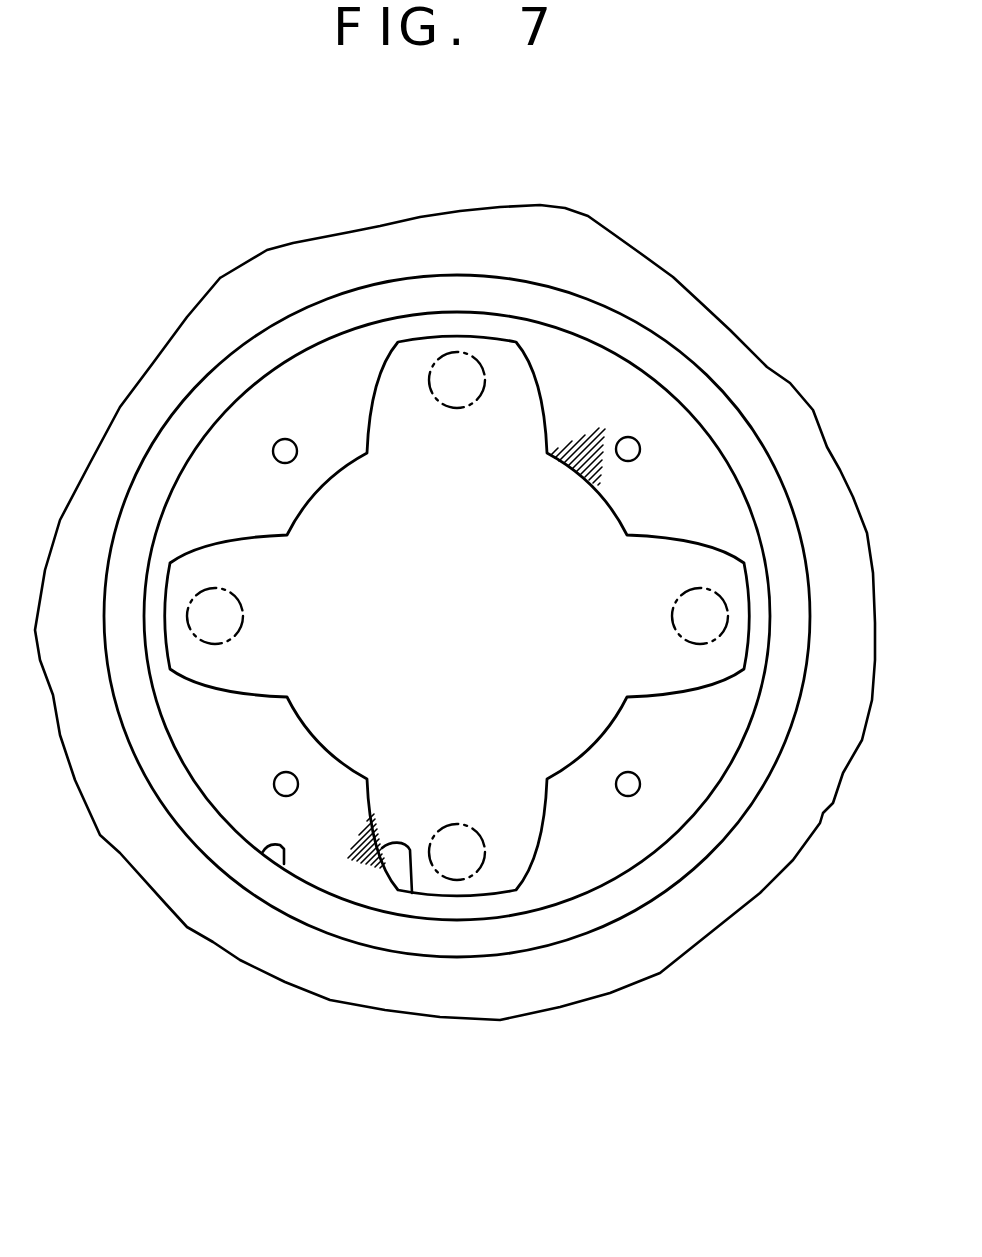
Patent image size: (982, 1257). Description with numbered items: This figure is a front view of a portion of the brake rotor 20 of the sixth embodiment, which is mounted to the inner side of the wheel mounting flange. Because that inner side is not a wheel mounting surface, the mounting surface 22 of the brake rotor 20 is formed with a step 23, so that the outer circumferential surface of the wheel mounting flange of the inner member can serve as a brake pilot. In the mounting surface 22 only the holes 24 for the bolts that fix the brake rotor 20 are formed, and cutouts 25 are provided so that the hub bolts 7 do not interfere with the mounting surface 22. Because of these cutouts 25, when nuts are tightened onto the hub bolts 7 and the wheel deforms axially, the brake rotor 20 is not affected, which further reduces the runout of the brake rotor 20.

The brake rotor 20 is at (698, 303).
The hub bolts 7 is at (703, 610).
The mounting surface 22 is at (597, 847).
The step 23 is at (260, 851).
The holes 24 is at (638, 786).
The cutouts 25 is at (412, 893).